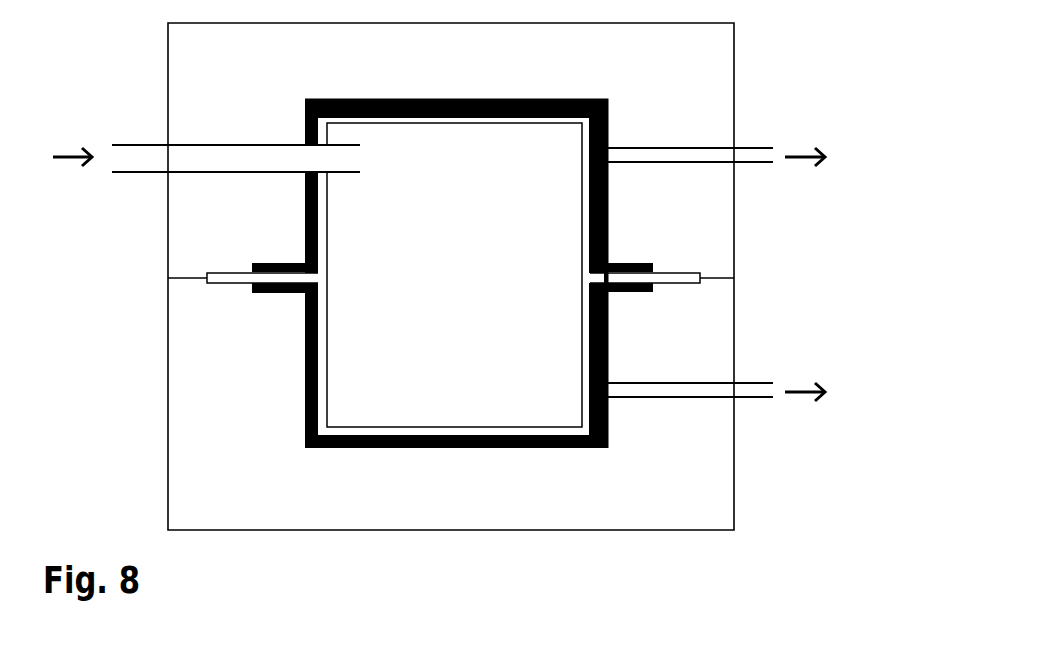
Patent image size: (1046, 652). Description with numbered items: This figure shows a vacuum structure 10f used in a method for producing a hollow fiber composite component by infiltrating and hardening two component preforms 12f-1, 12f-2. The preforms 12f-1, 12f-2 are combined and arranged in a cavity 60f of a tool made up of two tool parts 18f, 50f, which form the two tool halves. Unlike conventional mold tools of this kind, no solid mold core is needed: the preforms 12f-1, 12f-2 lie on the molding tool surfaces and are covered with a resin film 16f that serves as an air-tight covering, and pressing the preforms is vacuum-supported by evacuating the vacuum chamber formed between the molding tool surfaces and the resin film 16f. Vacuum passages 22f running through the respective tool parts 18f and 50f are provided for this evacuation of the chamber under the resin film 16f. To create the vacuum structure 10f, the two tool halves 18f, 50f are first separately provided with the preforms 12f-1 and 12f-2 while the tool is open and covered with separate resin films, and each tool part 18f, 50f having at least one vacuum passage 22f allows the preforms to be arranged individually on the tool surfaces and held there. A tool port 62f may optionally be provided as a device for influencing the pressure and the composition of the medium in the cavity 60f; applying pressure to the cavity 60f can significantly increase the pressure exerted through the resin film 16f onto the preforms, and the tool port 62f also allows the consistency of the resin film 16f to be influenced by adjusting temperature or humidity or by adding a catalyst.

The vacuum structure 10f is at (557, 197).
The component preform 12f-1 is at (305, 410).
The component preform 12f-2 is at (412, 103).
The resin film 16f is at (322, 242).
The tool part 18f is at (187, 392).
The vacuum passage 22f is at (635, 155).
The tool part 50f is at (182, 88).
The cavity 60f is at (470, 312).
The tool port 62f is at (225, 150).